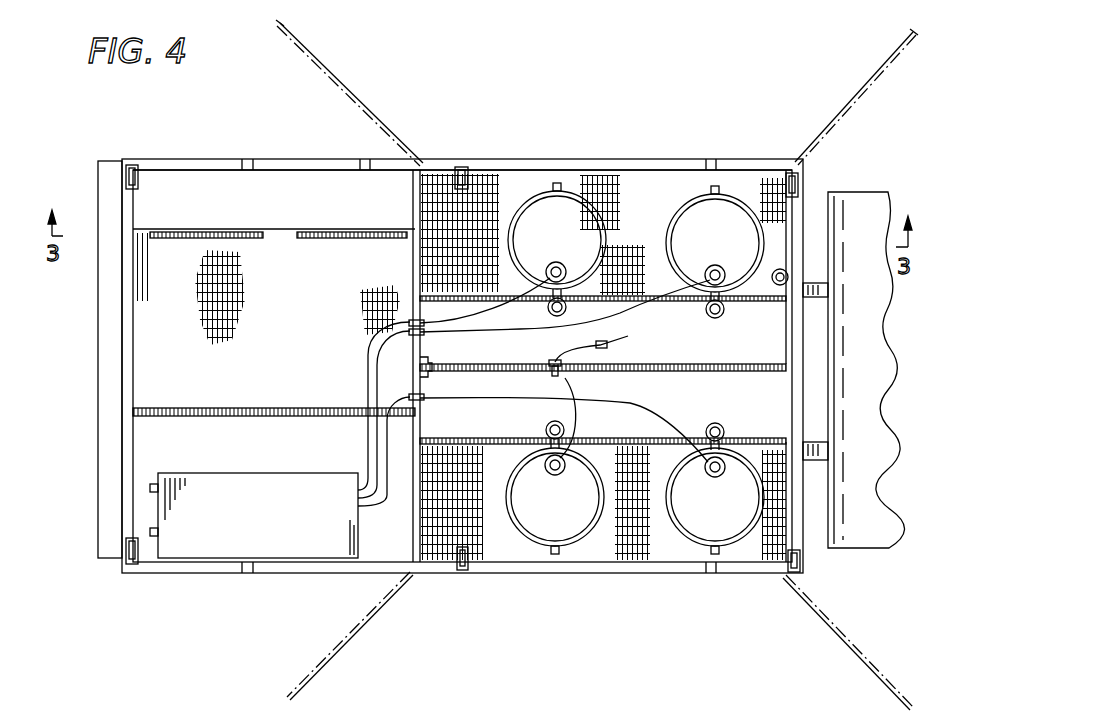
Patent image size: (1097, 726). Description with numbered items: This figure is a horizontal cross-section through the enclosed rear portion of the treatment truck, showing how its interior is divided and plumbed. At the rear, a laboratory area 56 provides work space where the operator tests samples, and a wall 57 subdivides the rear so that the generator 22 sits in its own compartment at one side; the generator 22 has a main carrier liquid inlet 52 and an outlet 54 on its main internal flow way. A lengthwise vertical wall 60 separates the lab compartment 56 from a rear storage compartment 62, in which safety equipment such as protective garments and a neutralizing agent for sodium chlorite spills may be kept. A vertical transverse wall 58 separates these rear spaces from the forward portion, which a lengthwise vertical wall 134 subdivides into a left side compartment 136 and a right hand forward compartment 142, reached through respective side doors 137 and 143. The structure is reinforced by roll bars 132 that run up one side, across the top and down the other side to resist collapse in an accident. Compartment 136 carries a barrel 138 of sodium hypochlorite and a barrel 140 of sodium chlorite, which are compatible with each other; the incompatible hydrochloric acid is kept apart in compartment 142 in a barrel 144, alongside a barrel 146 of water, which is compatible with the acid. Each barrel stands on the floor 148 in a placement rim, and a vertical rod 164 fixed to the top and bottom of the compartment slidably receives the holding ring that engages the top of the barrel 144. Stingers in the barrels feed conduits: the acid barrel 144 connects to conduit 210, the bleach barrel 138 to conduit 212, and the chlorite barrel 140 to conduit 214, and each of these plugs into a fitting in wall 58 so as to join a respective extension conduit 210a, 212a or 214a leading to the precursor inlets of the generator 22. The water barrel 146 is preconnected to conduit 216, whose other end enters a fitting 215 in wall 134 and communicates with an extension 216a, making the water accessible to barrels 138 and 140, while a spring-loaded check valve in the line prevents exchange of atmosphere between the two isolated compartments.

The generator 22 is at (295, 533).
The carrier liquid inlet 52 is at (150, 532).
The outlet 54 is at (150, 488).
The laboratory area 56 is at (297, 292).
The wall 57 is at (170, 410).
The vertical transverse wall 58 is at (410, 268).
The lengthwise vertical wall 60 is at (205, 228).
The rear storage compartment 62 is at (292, 195).
The roll bars 132 is at (461, 170).
The lengthwise vertical wall 134 is at (698, 367).
The left side compartment 136 is at (770, 344).
The side door 137 is at (310, 42).
The barrel 138 is at (537, 193).
The barrel 140 is at (693, 196).
The right hand forward compartment 142 is at (780, 408).
The side door 143 is at (320, 667).
The barrel 144 is at (690, 540).
The barrel 146 is at (540, 540).
The floor 148 is at (448, 535).
The vertical rod 164 is at (719, 420).
The conduit 210 is at (660, 400).
The extension conduit 210a is at (385, 400).
The conduit 212 is at (500, 308).
The extension conduit 212a is at (372, 342).
The conduit 214 is at (652, 297).
The extension conduit 214a is at (370, 367).
The fitting 215 is at (550, 357).
The conduit 216 is at (557, 388).
The extension 216a is at (628, 336).